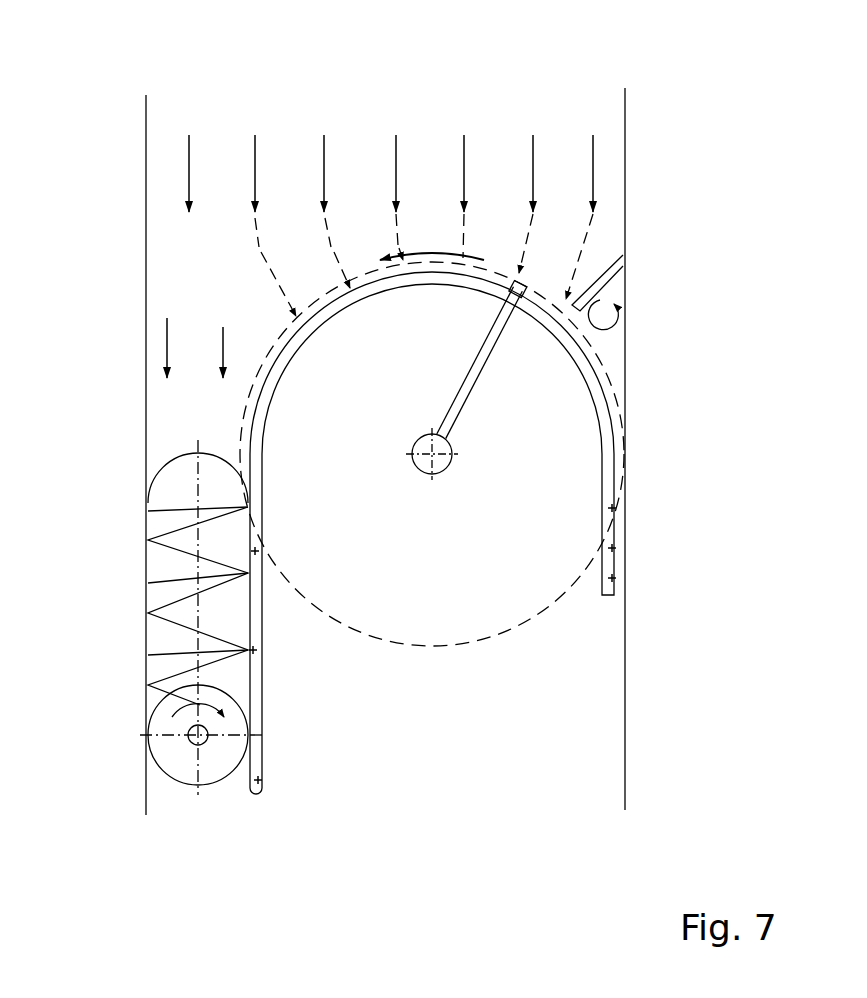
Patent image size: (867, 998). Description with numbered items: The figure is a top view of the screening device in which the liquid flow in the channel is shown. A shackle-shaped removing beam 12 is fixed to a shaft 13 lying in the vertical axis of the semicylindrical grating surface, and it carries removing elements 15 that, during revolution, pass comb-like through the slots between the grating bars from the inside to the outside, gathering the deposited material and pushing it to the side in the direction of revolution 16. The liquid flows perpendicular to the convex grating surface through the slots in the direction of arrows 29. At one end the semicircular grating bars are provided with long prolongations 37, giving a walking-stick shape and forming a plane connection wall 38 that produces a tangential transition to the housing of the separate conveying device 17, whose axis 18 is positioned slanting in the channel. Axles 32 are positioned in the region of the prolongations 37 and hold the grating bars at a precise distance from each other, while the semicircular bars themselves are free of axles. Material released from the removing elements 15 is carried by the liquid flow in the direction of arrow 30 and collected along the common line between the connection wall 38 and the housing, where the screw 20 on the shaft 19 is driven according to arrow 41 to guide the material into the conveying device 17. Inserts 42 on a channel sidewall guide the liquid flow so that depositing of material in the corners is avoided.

The removing beam 12 is at (472, 383).
The shaft 13 is at (440, 458).
The removing elements 15 is at (522, 283).
The direction of revolution 16 is at (425, 252).
The conveying device 17 is at (138, 628).
The axis 18 is at (192, 655).
The shaft 19 is at (195, 740).
The screw 20 is at (148, 561).
The arrows 29 is at (534, 157).
The arrow 30 is at (223, 327).
The axles 32 is at (255, 551).
The prolongations 37 is at (256, 713).
The connection wall 38 is at (263, 657).
The arrow 41 is at (183, 701).
The inserts 42 is at (603, 280).